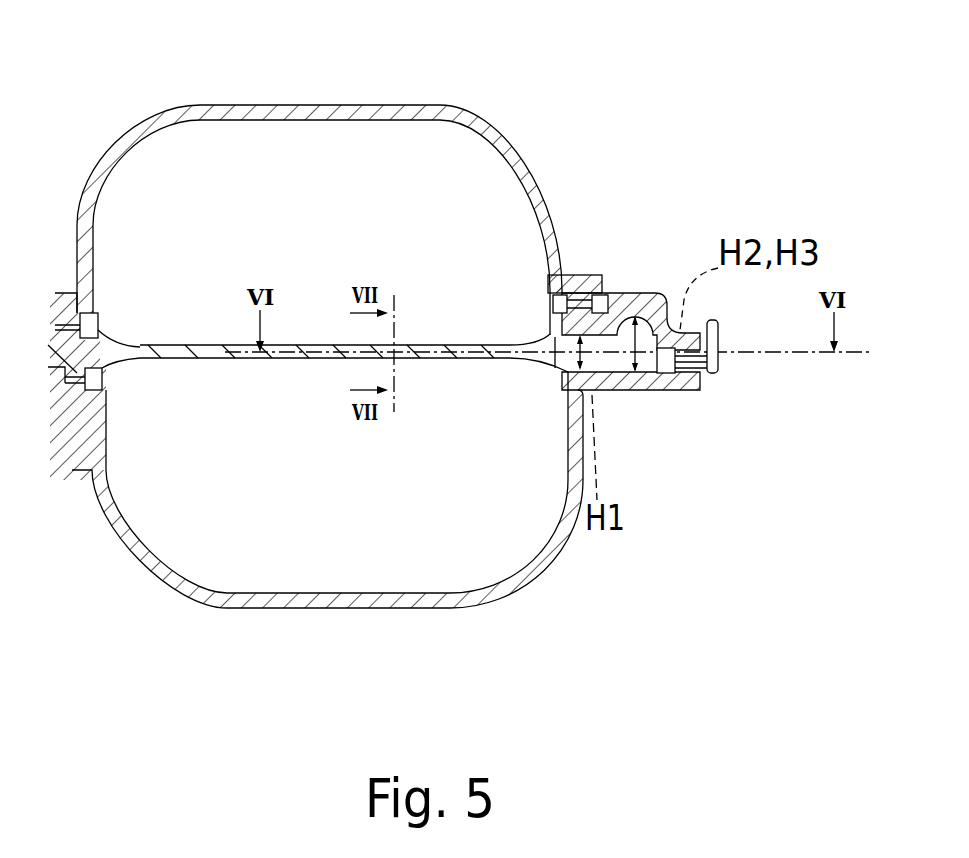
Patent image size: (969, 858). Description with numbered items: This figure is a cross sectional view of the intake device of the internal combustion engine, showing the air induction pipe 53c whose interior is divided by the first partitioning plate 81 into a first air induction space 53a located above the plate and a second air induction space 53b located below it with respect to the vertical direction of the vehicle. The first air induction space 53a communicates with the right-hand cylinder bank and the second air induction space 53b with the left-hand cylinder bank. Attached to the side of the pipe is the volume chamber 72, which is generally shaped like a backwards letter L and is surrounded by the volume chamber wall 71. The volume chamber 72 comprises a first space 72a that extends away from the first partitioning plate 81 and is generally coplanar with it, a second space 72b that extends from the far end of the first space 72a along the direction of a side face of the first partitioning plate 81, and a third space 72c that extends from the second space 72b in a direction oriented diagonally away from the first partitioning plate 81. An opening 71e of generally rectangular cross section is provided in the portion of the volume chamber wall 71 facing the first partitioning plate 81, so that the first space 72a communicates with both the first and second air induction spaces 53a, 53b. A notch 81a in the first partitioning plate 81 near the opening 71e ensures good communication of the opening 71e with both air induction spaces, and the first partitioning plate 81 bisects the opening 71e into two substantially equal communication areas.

The first air induction space 53a is at (352, 211).
The second air induction space 53b is at (354, 546).
The tank shell wall 53c is at (442, 112).
The volume chamber wall 71 is at (632, 300).
The opening 71e is at (548, 341).
The volume chamber 72 is at (654, 497).
The first space 72a is at (618, 392).
The second space 72b is at (657, 390).
The third space 72c is at (691, 362).
The first partitioning plate 81 is at (173, 360).
The notch 81a is at (518, 368).